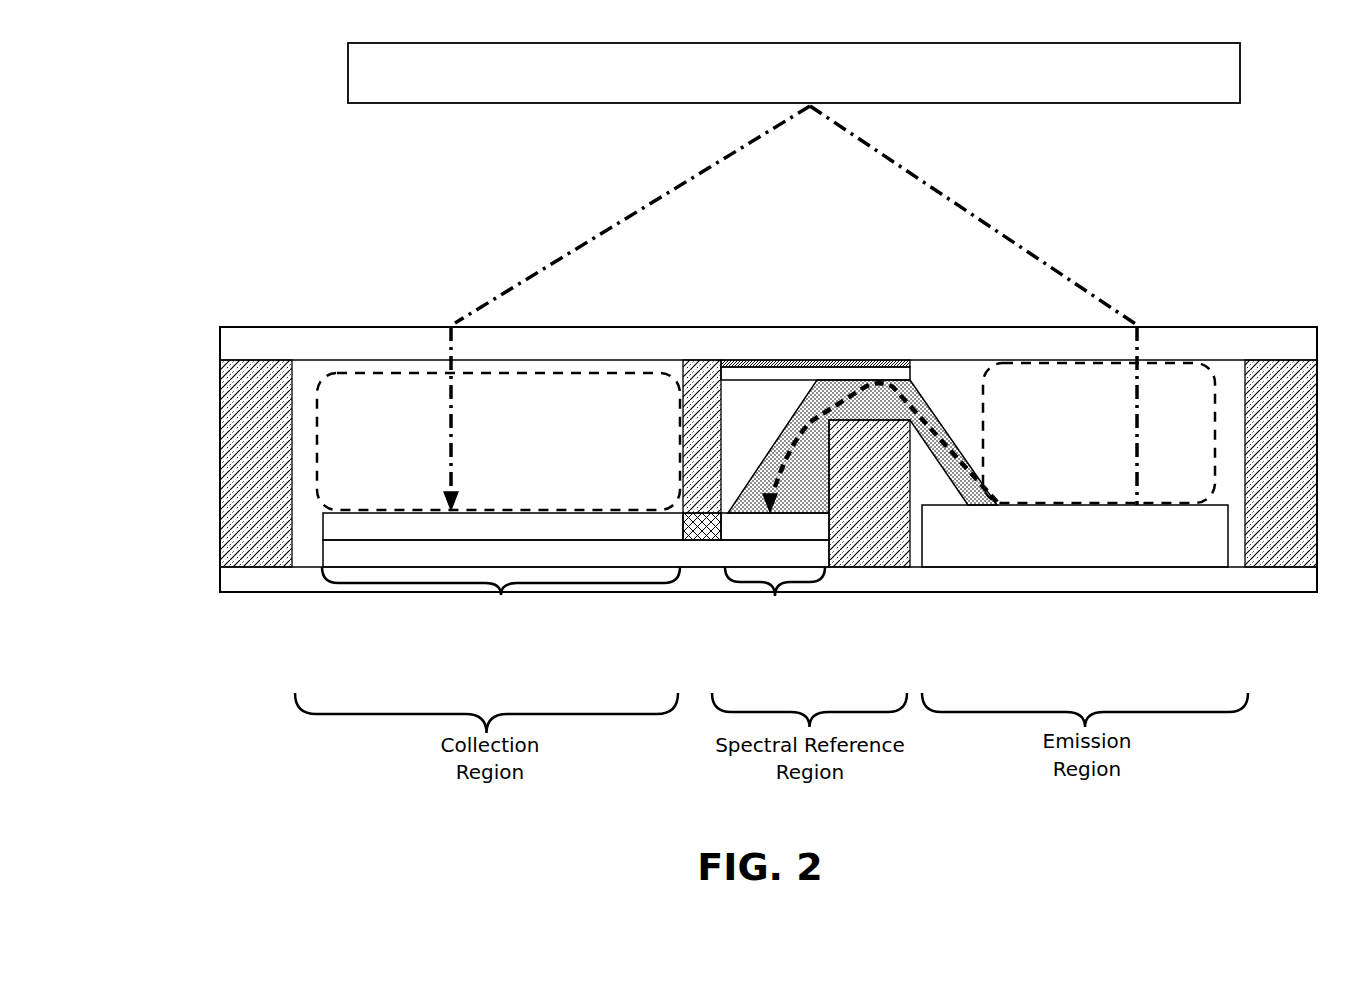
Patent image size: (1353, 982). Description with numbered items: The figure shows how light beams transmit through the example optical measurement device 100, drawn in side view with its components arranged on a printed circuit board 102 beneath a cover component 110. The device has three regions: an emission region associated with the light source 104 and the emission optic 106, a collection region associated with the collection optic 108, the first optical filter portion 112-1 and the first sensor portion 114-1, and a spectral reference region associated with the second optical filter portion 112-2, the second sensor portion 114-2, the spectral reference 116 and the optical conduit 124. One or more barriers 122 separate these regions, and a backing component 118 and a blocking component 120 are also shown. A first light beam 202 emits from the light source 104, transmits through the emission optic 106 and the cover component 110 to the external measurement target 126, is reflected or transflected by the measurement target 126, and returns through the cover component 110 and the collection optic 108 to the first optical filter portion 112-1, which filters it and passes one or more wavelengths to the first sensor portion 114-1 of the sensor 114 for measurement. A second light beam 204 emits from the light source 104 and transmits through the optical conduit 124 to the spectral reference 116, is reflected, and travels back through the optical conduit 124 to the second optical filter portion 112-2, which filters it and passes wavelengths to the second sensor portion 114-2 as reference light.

The optical measurement device 100 is at (270, 265).
The printed circuit board 102 is at (1023, 589).
The light source 104 is at (1055, 546).
The emission optic 106 is at (1078, 442).
The collection optic 108 is at (477, 451).
The cover component 110 is at (500, 353).
The first optical filter portion 112-1 is at (470, 537).
The second optical filter portion 112-2 is at (745, 537).
The sensor 114 is at (555, 564).
The first sensor portion 114-1 is at (501, 595).
The second sensor portion 114-2 is at (775, 595).
The spectral reference 116 is at (880, 366).
The backing component 118 is at (820, 346).
The blocking component 120 is at (702, 554).
The barriers 122 is at (222, 472).
The optical conduit 124 is at (805, 390).
The measurement target 126 is at (775, 83).
The first light beam 202 is at (968, 205).
The second light beam 204 is at (920, 421).